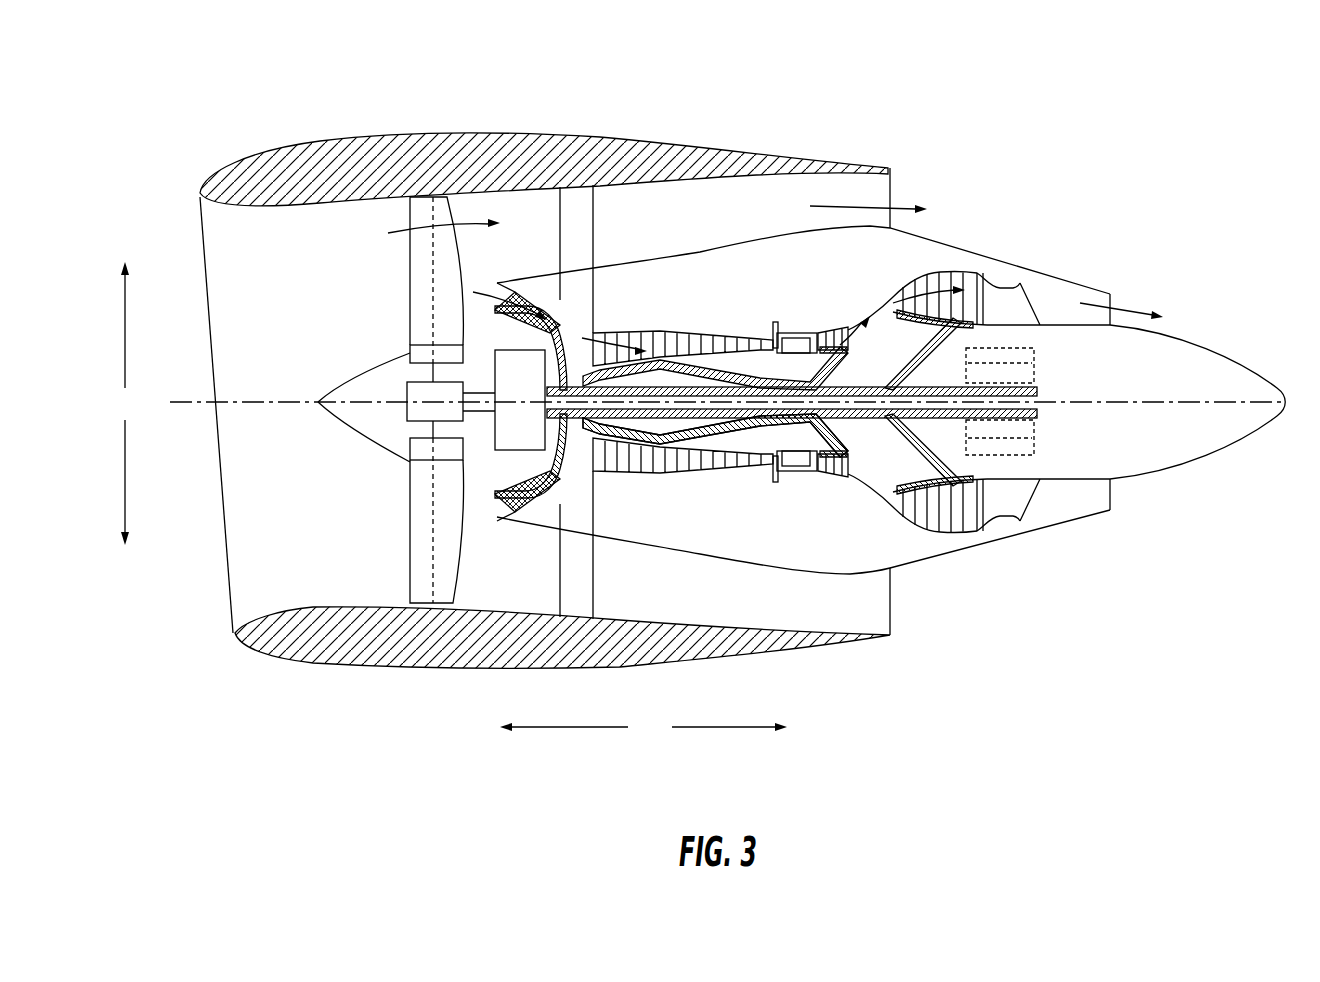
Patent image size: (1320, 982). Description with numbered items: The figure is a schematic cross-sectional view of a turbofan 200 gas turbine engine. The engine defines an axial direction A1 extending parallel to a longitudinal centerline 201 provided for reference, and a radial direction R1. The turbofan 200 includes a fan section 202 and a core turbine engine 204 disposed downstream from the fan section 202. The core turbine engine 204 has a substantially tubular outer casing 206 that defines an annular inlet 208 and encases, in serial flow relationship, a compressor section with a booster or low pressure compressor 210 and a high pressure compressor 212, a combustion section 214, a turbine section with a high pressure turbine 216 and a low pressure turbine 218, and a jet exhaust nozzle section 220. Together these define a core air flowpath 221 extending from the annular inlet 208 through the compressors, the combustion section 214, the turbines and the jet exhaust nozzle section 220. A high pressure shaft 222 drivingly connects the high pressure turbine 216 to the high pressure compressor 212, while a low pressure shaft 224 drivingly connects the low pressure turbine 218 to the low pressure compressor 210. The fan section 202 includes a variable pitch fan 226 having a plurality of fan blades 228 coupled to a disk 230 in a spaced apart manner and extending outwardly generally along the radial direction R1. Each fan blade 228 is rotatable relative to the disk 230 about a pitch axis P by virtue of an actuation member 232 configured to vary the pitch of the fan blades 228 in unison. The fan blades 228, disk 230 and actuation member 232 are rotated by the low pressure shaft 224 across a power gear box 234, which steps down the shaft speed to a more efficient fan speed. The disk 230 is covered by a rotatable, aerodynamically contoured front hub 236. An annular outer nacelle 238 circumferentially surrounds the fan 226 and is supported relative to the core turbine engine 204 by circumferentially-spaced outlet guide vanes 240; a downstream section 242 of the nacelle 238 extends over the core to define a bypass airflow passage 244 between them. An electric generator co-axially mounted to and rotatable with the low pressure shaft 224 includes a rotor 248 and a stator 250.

The turbofan 200 is at (1035, 142).
The longitudinal centerline 201 is at (1103, 400).
The fan section 202 is at (366, 214).
The core turbine engine 204 is at (714, 280).
The outer casing 206 is at (747, 563).
The annular inlet 208 is at (505, 510).
The low pressure compressor 210 is at (537, 510).
The high pressure compressor 212 is at (623, 458).
The combustion section 214 is at (790, 470).
The high pressure turbine 216 is at (878, 470).
The low pressure turbine 218 is at (975, 535).
The jet exhaust nozzle section 220 is at (1036, 520).
The core air flowpath 221 is at (580, 480).
The high pressure shaft 222 is at (793, 373).
The low pressure shaft 224 is at (1037, 383).
The variable pitch fan 226 is at (368, 456).
The fan blades 228 is at (407, 548).
The disk 230 is at (425, 355).
The actuation member 232 is at (527, 367).
The power gear box 234 is at (530, 367).
The front hub 236 is at (318, 403).
The outer nacelle 238 is at (453, 670).
The outlet guide vanes 240 is at (597, 213).
The downstream section 242 is at (820, 148).
The bypass airflow passage 244 is at (742, 222).
The rotor 248 is at (1023, 420).
The stator 250 is at (1023, 447).
The pitch axis P is at (437, 212).
The radial direction R1 is at (132, 403).
The axial direction A1 is at (643, 732).